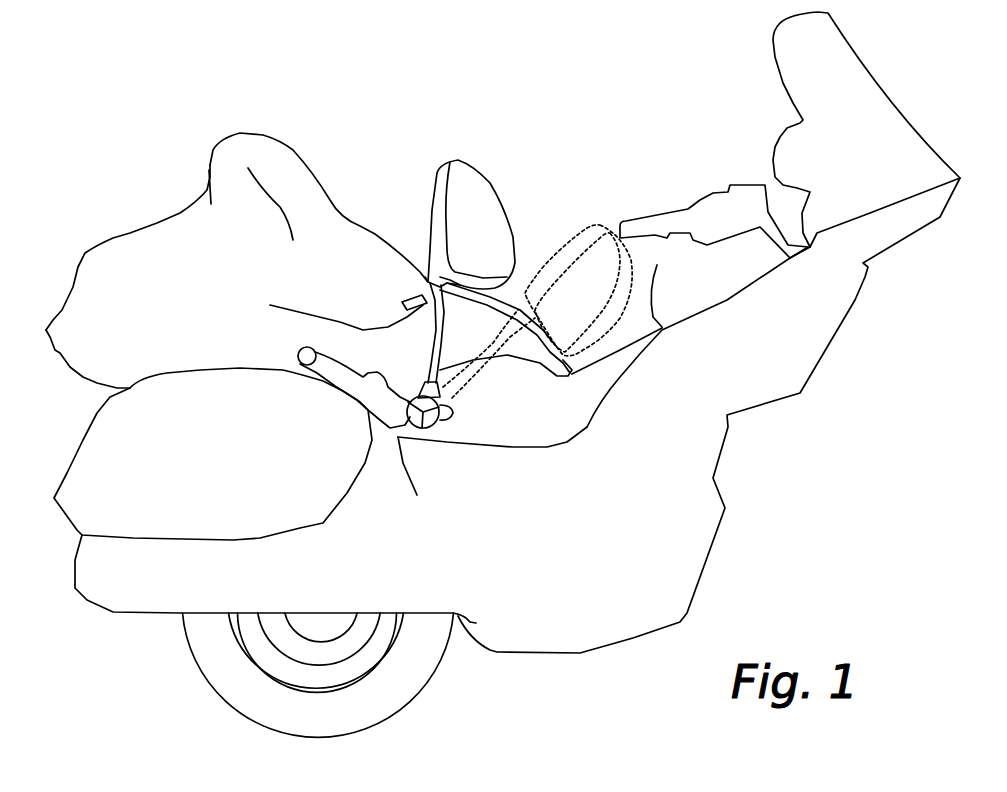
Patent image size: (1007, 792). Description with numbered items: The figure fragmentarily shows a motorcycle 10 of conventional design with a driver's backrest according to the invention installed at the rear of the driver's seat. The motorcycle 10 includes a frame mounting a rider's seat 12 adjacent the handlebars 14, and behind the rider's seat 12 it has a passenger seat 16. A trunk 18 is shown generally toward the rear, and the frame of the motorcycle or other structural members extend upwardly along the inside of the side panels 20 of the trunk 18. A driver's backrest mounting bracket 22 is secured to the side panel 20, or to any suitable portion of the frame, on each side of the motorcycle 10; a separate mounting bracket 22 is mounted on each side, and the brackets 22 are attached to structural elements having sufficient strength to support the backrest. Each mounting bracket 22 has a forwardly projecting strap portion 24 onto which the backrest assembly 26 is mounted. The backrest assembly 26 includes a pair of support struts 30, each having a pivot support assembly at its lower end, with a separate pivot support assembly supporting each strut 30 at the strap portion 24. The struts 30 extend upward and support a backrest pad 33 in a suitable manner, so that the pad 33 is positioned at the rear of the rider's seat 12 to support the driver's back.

The motorcycle 10 is at (373, 213).
The rider's seat 12 is at (653, 287).
The handlebars 14 is at (707, 190).
The passenger seat 16 is at (273, 170).
The trunk 18 is at (118, 237).
The side panels 20 is at (250, 347).
The backrest mounting bracket 22 is at (380, 412).
The strap portion 24 is at (455, 412).
The backrest assembly 26 is at (470, 155).
The support struts 30 is at (498, 293).
The backrest pad 33 is at (483, 197).